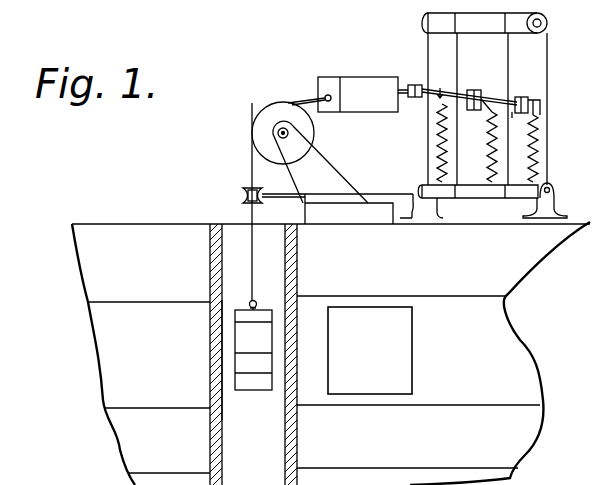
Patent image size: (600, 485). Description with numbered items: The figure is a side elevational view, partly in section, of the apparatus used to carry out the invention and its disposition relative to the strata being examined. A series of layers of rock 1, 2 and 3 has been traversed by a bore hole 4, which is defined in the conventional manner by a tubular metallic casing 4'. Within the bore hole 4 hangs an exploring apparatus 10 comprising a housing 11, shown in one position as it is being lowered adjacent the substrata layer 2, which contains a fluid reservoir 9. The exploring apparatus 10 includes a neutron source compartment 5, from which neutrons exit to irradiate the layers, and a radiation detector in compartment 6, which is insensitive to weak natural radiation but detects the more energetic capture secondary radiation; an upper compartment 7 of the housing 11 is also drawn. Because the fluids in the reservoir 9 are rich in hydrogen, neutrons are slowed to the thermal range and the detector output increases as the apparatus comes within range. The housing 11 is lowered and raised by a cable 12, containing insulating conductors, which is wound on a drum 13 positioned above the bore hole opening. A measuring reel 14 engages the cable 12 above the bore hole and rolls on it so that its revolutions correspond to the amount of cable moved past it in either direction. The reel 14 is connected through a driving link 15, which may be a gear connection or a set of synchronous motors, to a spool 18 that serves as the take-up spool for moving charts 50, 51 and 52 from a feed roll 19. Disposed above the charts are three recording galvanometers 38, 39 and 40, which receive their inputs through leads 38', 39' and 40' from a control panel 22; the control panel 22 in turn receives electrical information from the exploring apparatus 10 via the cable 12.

The layer of rock 1 is at (331, 353).
The substrata layer 2 is at (297, 329).
The layer of rock 3 is at (352, 408).
The bore hole 4 is at (253, 354).
The tubular metallic casing 4' is at (232, 367).
The neutron source compartment 5 is at (253, 382).
The radiation detector compartment 6 is at (253, 362).
The upper instrument section 7 is at (253, 350).
The fluid reservoir 9 is at (370, 350).
The exploring apparatus 10 is at (268, 303).
The housing 11 is at (236, 330).
The cable 12 is at (254, 262).
The drum 13 is at (310, 134).
The measuring reel 14 is at (243, 194).
The driving link 15 is at (375, 195).
The spool 18 is at (552, 186).
The feed roll 19 is at (546, 23).
The control panel 22 is at (352, 82).
The recording galvanometer 38 is at (457, 75).
The lead 38' is at (418, 66).
The recording galvanometer 39 is at (480, 125).
The lead 39' is at (442, 143).
The recording galvanometer 40 is at (545, 139).
The lead 40' is at (488, 179).
The chart 50 is at (442, 109).
The chart 51 is at (488, 109).
The chart 52 is at (536, 66).